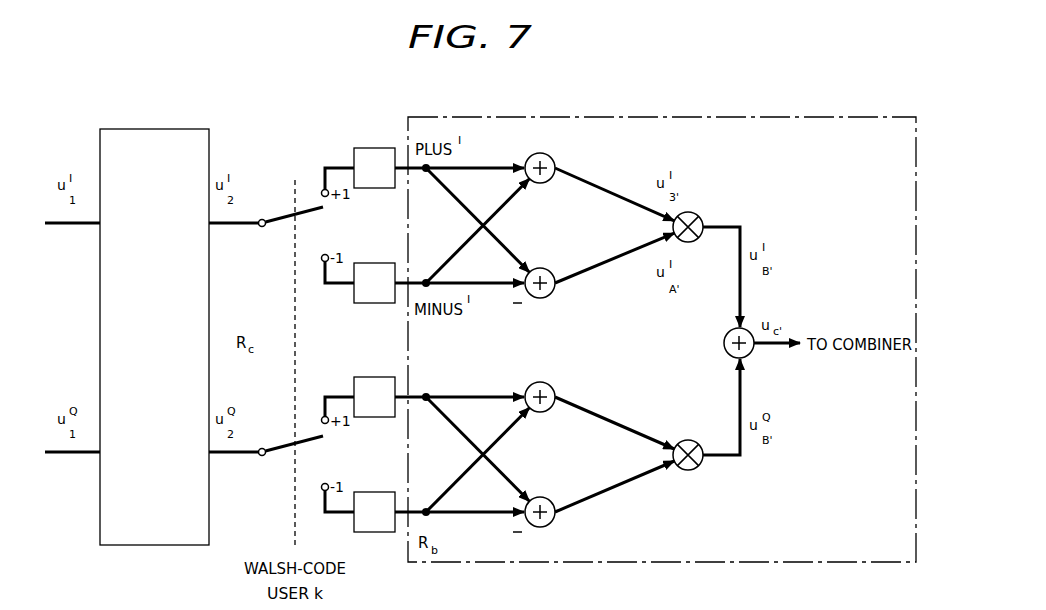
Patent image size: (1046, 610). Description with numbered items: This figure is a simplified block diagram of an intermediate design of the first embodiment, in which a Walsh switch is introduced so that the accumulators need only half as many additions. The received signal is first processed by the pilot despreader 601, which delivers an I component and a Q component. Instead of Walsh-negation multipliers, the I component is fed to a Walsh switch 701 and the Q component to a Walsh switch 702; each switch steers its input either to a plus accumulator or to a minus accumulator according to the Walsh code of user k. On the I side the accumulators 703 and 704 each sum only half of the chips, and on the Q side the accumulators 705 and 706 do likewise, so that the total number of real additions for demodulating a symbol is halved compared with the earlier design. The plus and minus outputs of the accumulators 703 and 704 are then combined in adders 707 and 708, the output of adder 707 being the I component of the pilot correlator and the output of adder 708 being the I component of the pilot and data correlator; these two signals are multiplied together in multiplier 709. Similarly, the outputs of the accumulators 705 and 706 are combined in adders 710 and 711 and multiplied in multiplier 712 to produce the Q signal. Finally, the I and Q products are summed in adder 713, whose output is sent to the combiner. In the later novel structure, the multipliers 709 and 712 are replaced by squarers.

The pilot despreader 601 is at (160, 546).
The Walsh switch 701 is at (272, 217).
The Walsh switch 702 is at (272, 446).
The accumulator 703 is at (354, 152).
The accumulator 704 is at (354, 296).
The accumulator 705 is at (354, 383).
The accumulator 706 is at (375, 532).
The adder 707 is at (551, 156).
The adder 708 is at (550, 269).
The multiplier 709 is at (700, 218).
The adder 710 is at (551, 386).
The adder 711 is at (550, 498).
The multiplier 712 is at (700, 467).
The adder 713 is at (754, 355).